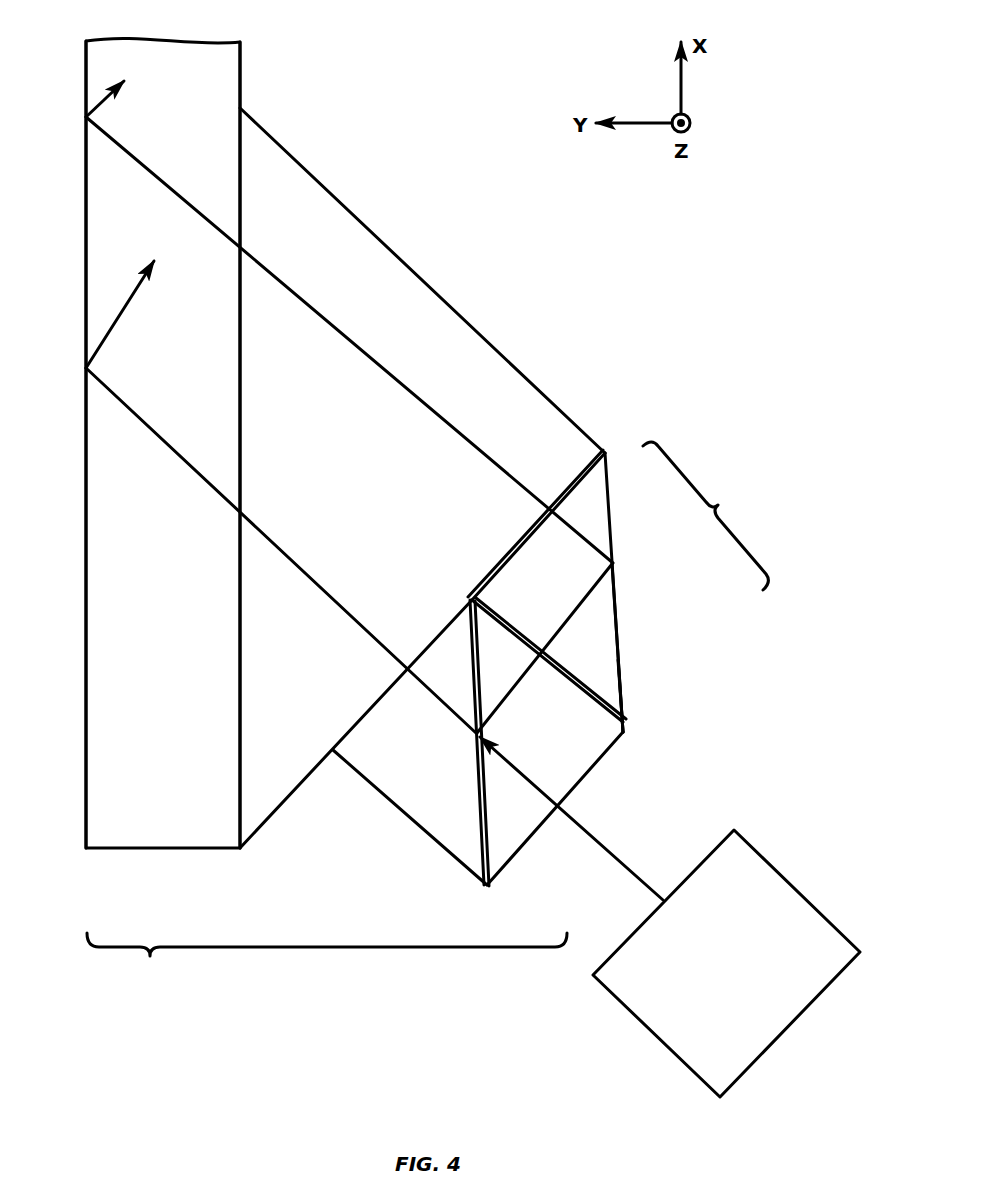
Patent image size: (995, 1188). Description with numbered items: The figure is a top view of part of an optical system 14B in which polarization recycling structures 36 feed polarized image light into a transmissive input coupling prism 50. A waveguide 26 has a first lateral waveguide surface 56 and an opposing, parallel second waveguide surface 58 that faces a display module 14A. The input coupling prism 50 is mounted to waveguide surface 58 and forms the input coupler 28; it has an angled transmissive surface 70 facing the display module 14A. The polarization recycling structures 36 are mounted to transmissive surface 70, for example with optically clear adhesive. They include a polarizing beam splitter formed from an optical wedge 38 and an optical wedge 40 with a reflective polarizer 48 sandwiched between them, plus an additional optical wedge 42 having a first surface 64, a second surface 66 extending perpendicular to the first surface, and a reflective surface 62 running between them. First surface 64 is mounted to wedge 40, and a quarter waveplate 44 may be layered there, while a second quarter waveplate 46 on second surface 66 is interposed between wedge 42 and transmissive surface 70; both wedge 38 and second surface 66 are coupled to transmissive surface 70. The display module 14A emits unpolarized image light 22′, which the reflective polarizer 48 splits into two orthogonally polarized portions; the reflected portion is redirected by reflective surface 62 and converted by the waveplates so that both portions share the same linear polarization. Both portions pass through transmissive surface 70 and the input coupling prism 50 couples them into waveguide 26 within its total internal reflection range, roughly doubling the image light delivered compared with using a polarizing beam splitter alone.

The display module 14A is at (803, 907).
The optical system 14B is at (327, 958).
The unpolarized image light 22′ is at (593, 836).
The waveguide 26 is at (100, 605).
The input coupler 28 is at (349, 97).
The polarization recycling structures 36 is at (705, 516).
The optical wedge 38 is at (445, 829).
The optical wedge 40 is at (590, 764).
The optical wedge 42 is at (608, 635).
The quarter waveplate 44 is at (622, 704).
The quarter waveplate 46 is at (595, 465).
The reflective polarizer 48 is at (476, 760).
The input coupling prism 50 is at (498, 362).
The waveguide surface 56 is at (90, 728).
The waveguide surface 58 is at (238, 680).
The reflective surface 62 is at (621, 584).
The first surface 64 is at (511, 616).
The second surface 66 is at (530, 547).
The transmissive surface 70 is at (296, 797).